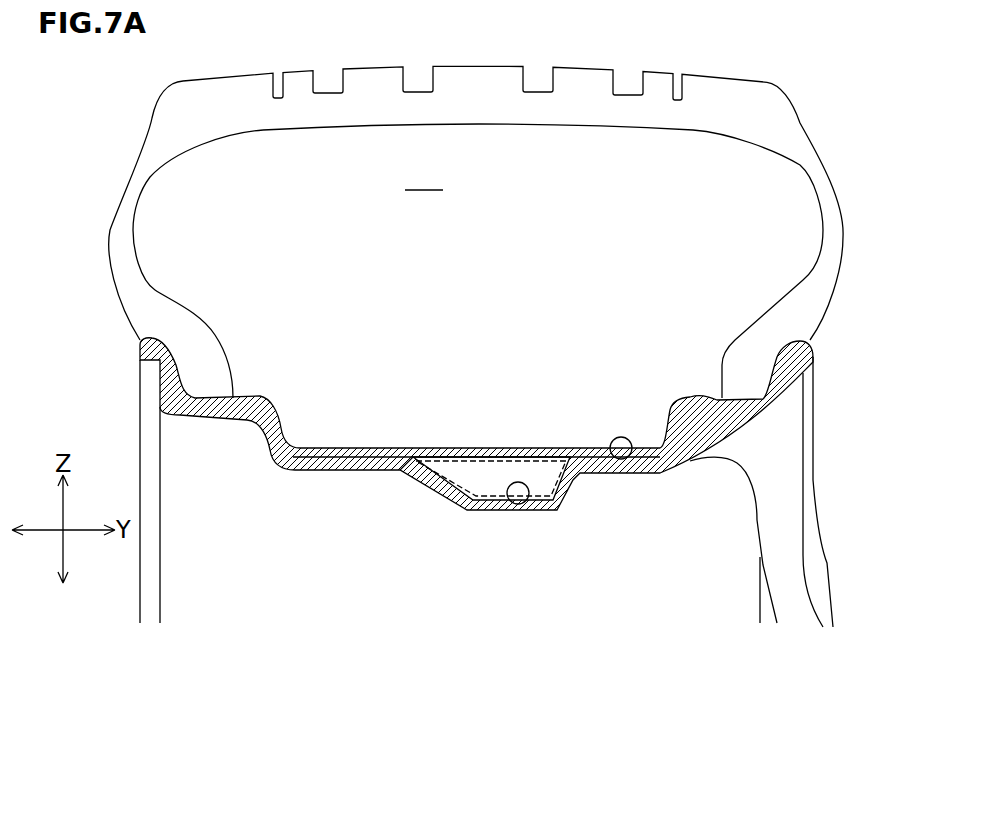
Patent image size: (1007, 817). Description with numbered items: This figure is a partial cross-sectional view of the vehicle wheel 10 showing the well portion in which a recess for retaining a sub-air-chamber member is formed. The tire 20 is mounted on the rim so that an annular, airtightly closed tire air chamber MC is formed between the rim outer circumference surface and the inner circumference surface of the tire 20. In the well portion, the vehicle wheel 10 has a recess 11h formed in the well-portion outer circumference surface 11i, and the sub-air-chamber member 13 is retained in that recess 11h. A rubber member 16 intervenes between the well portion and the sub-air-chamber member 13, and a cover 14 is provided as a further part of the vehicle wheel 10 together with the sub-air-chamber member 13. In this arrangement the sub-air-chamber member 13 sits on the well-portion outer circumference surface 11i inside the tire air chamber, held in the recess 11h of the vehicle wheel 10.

The vehicle wheel 10 is at (844, 411).
The recess 11h is at (527, 503).
The well-portion outer circumference surface 11i is at (625, 459).
The sub-air-chamber member 13 is at (527, 449).
The cover 14 is at (373, 447).
The rubber member 16 is at (405, 467).
The tire 20 is at (675, 69).